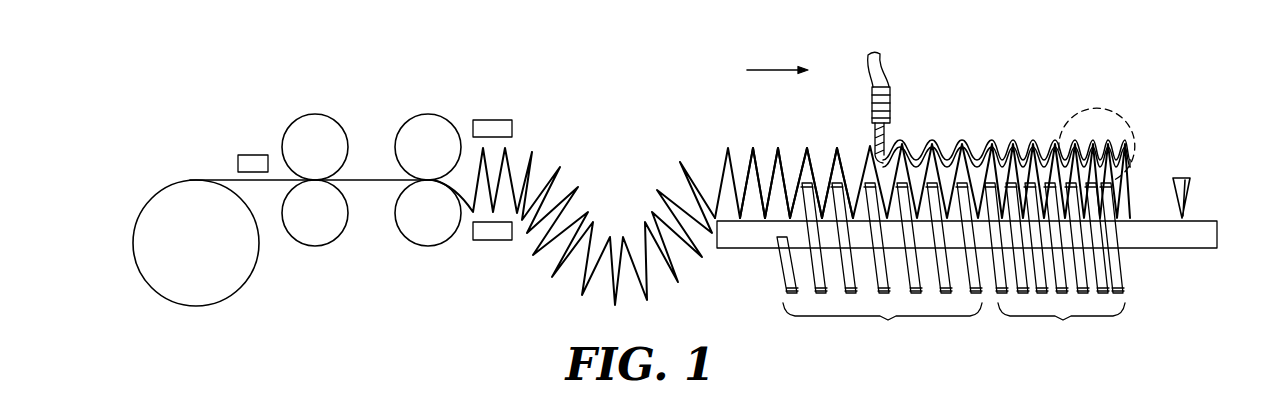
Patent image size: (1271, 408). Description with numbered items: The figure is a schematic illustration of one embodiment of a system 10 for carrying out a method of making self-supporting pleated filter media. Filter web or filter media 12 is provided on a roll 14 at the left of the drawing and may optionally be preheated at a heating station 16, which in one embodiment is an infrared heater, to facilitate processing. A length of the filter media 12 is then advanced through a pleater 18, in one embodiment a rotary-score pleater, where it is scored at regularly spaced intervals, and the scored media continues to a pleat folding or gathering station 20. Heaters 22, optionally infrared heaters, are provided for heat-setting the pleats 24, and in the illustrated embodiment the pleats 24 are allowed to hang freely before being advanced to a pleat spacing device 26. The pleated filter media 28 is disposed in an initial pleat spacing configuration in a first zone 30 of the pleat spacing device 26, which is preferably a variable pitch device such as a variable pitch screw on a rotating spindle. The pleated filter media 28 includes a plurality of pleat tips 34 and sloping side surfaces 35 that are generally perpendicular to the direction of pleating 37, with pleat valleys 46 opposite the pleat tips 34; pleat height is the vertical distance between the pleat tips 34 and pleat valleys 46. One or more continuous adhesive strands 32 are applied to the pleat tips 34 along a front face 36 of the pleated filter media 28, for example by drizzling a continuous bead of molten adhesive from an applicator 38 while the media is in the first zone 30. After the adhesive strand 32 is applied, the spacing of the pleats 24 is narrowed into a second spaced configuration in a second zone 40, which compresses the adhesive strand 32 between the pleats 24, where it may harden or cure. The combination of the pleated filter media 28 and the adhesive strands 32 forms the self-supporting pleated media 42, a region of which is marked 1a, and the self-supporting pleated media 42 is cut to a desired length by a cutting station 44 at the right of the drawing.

The system 10 is at (658, 76).
The filter media 12 is at (228, 178).
The roll 14 is at (217, 303).
The heating station 16 is at (253, 155).
The pleater 18 is at (315, 112).
The pleat folding or gathering station 20 is at (428, 113).
The heaters 22 is at (492, 120).
The pleats 24 is at (533, 157).
The pleat spacing device 26 is at (782, 272).
The pleated filter media 28 is at (723, 156).
The first zone 30 is at (882, 326).
The adhesive strand 32 is at (885, 130).
The pleat tips 34 is at (808, 150).
The sloping side surfaces 35 is at (760, 158).
The front face 36 is at (835, 130).
The direction of pleating 37 is at (763, 66).
The applicator 38 is at (892, 97).
The second zone 40 is at (1061, 326).
The self-supporting pleated media 42 is at (1125, 128).
The cutting station 44 is at (1190, 187).
The pleat valleys 46 is at (742, 248).
The detail region of FIG. 1a is at (1103, 112).